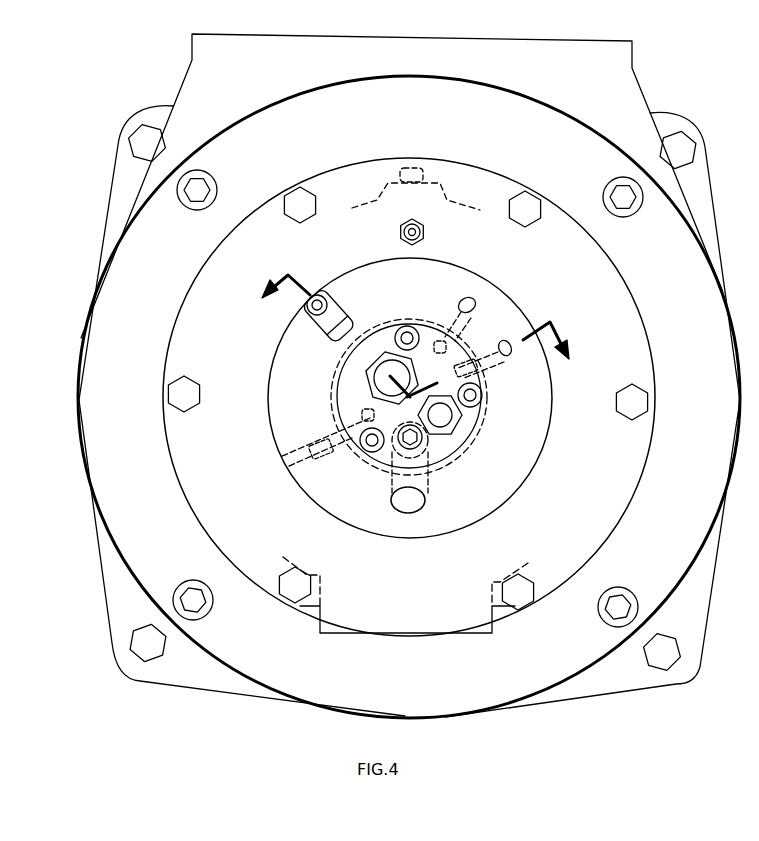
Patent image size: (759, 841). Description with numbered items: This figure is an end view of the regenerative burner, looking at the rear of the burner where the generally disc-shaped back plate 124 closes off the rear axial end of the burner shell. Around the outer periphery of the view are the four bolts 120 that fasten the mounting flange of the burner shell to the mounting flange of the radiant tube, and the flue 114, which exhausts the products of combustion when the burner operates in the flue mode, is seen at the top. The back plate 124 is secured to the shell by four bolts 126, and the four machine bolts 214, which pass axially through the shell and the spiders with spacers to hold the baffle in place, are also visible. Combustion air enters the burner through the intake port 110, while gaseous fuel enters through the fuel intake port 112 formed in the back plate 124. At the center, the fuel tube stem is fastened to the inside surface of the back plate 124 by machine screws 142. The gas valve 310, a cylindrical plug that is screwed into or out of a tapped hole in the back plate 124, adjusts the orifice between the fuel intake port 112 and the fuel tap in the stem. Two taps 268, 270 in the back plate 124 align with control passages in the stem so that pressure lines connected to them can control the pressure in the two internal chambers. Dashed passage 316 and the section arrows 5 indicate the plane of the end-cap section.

The flue 114 is at (591, 19).
The bolts 120 is at (148, 146).
The machine bolts 214 is at (197, 208).
The bolts 126 is at (297, 222).
The back plate 124 is at (600, 537).
The intake port 110 is at (388, 634).
The machine screws 142 is at (397, 343).
The gas valve 310 is at (421, 440).
The fuel intake port 112 is at (425, 500).
The tap 268 is at (506, 357).
The tap 270 is at (478, 310).
The passage 316 is at (336, 462).
The section line 5- 5 is at (414, 324).